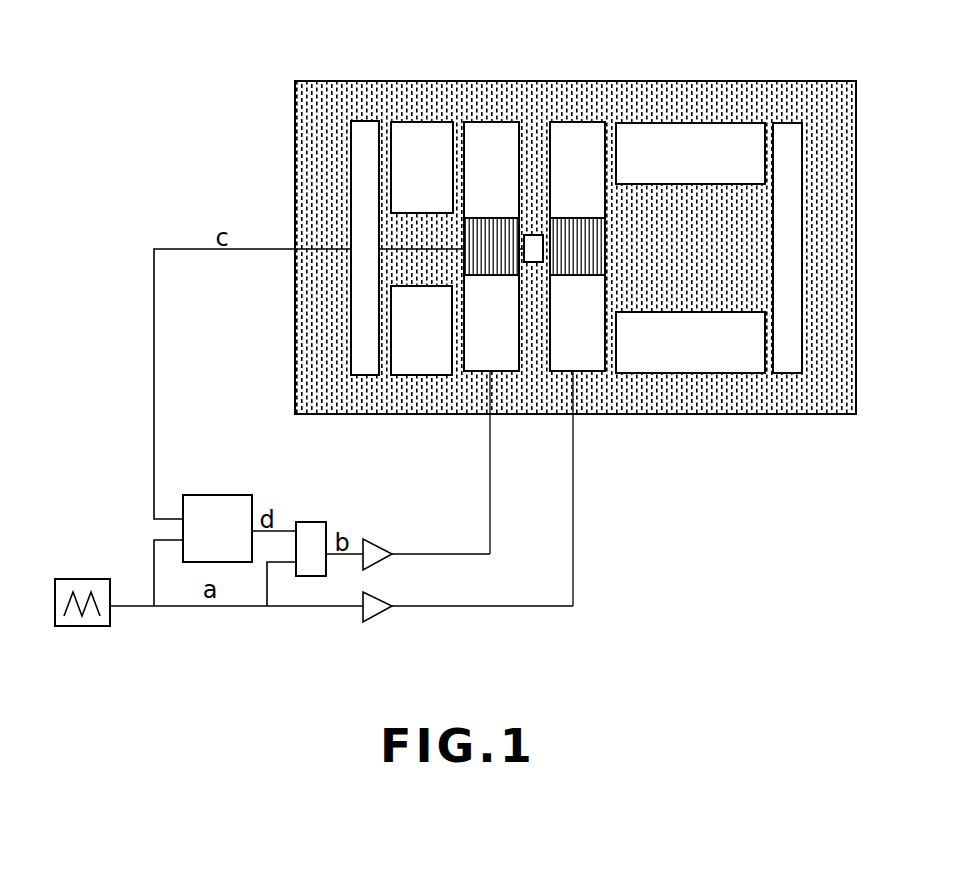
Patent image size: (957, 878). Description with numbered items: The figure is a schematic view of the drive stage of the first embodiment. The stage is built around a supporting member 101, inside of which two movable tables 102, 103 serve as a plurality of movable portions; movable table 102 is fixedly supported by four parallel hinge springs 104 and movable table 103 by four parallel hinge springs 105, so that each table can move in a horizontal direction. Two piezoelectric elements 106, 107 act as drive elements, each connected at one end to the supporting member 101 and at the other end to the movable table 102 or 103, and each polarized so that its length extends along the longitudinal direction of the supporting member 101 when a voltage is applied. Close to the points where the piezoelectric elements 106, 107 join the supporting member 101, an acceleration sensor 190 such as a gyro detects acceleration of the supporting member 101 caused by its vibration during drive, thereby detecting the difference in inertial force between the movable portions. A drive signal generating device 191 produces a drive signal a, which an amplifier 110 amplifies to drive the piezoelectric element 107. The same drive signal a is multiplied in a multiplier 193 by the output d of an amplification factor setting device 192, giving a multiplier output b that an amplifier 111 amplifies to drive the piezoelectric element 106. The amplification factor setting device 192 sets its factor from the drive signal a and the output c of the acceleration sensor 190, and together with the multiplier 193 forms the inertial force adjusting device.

The supporting member 101 is at (831, 400).
The movable table 102 is at (658, 205).
The movable table 103 is at (418, 223).
The parallel hinge springs 104 is at (452, 333).
The parallel hinge springs 105 is at (758, 350).
The piezoelectric element 106 is at (494, 237).
The piezoelectric element 107 is at (580, 228).
The acceleration sensor 190 is at (534, 250).
The drive signal generating device 191 is at (75, 579).
The amplification factor setting device 192 is at (220, 510).
The multiplier 193 is at (313, 527).
The amplifier 110 is at (372, 610).
The amplifier 111 is at (378, 540).